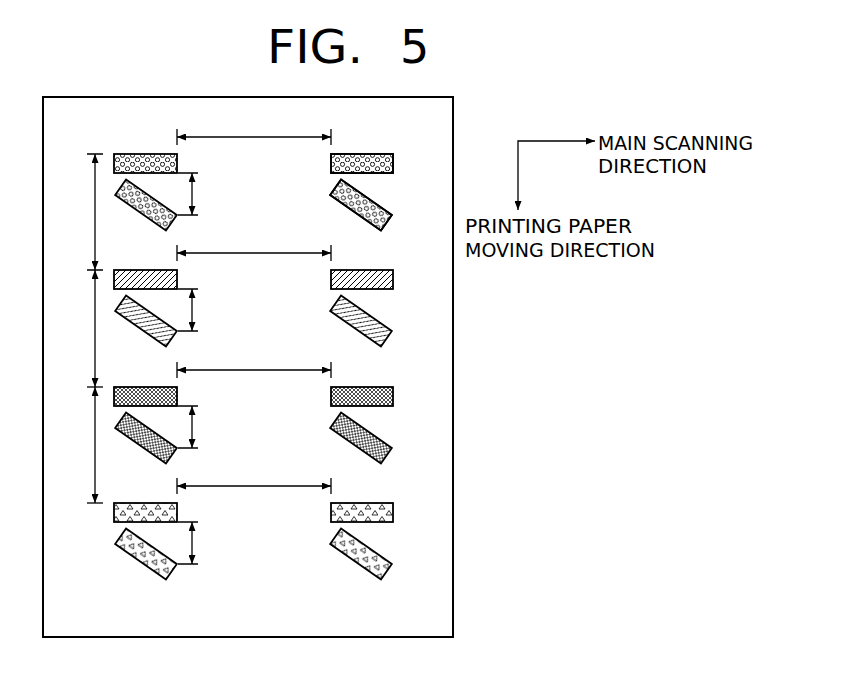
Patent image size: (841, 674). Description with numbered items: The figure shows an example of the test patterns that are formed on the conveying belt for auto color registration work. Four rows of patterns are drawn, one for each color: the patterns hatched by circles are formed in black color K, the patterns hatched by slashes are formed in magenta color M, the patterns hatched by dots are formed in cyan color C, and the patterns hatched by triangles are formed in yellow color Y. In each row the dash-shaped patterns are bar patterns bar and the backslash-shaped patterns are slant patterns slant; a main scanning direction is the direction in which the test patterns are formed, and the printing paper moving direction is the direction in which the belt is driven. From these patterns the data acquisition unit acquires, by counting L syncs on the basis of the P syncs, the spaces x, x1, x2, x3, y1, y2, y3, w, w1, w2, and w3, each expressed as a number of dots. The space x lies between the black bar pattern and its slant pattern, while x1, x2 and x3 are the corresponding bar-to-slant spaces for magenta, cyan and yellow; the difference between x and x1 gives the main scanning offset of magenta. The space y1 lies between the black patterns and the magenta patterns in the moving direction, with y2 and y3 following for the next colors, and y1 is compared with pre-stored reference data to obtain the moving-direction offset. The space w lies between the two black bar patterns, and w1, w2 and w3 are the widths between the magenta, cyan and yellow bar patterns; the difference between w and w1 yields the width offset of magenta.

The black color test patterns K is at (82, 171).
The magenta color test patterns M is at (82, 287).
The cyan color test patterns C is at (82, 404).
The yellow color test patterns Y is at (82, 521).
The bar pattern bar is at (373, 153).
The slant pattern slant is at (370, 201).
The space between black bar patterns w is at (254, 129).
The space between magenta bar patterns w1 is at (254, 245).
The space between cyan bar patterns w2 is at (254, 362).
The space between yellow bar patterns w3 is at (254, 478).
The space between black bar pattern and slant pattern x is at (193, 194).
The space between magenta bar pattern and slant pattern x1 is at (199, 310).
The space between cyan bar pattern and slant pattern x2 is at (199, 427).
The space between yellow bar pattern and slant pattern x3 is at (199, 543).
The space between black and magenta patterns in moving direction y1 is at (84, 212).
The space between magenta and cyan patterns in moving direction y2 is at (84, 328).
The space between cyan and yellow patterns in moving direction y3 is at (84, 445).